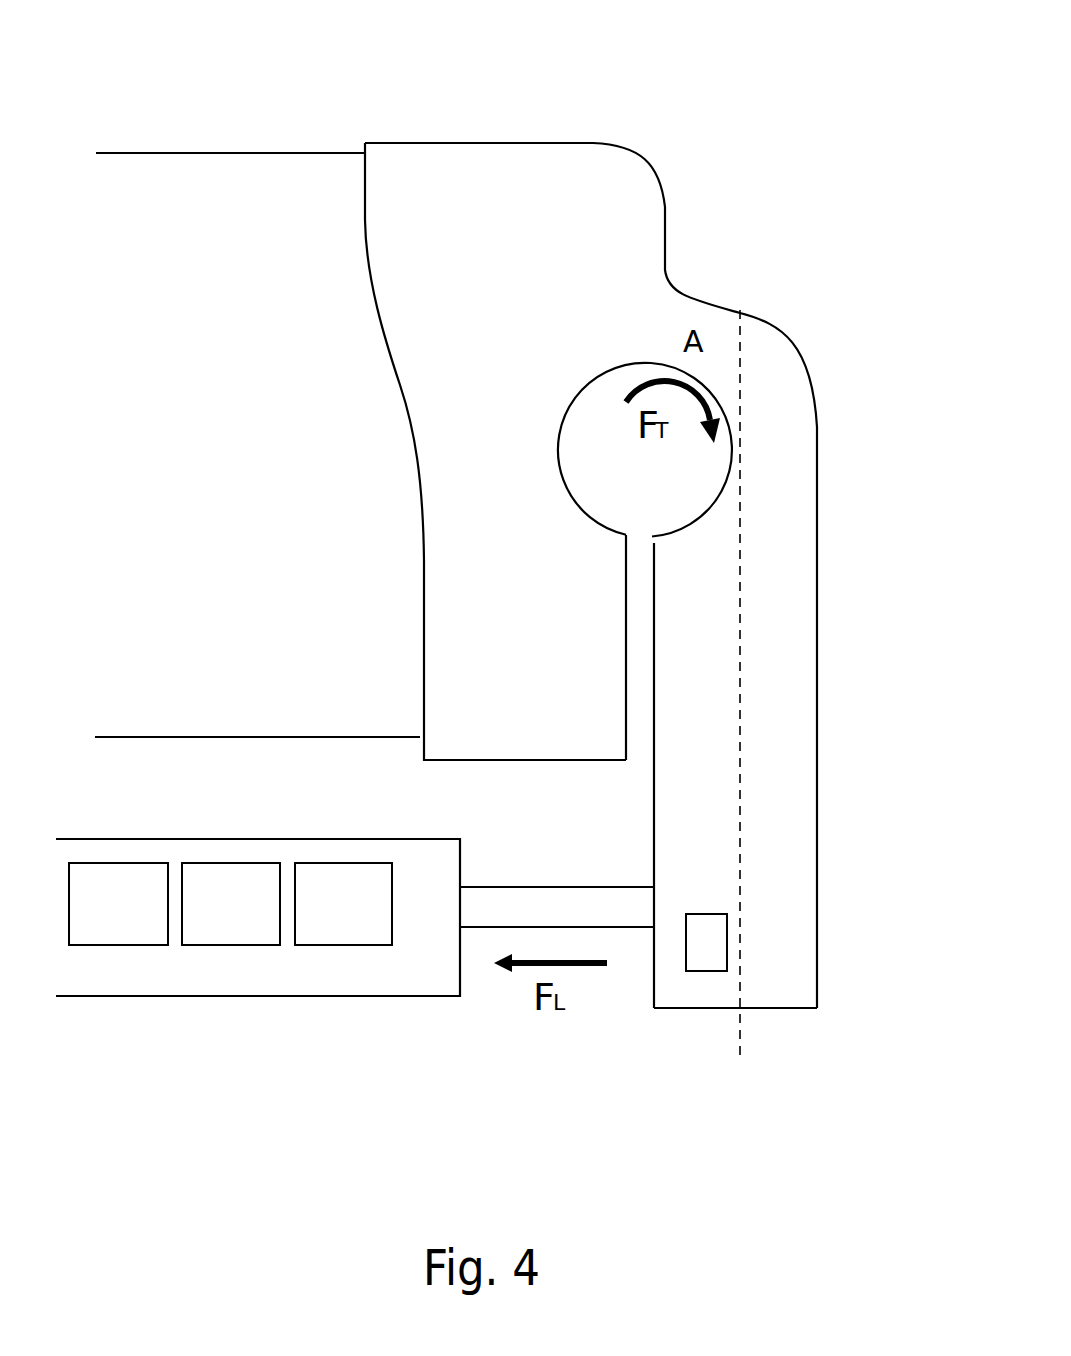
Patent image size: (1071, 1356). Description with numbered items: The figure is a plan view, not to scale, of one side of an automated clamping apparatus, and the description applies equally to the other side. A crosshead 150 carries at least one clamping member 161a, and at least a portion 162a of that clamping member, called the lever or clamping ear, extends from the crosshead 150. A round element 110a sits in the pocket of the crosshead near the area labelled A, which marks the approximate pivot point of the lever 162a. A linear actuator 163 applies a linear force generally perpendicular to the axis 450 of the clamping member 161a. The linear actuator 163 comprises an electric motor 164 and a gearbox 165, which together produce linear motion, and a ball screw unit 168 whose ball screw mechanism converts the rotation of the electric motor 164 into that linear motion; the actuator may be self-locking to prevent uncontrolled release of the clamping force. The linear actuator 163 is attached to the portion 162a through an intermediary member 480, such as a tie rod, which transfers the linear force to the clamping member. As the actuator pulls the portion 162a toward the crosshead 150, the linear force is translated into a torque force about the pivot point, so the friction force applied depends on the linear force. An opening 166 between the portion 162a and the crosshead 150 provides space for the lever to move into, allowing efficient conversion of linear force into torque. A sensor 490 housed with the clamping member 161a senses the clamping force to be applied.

The crosshead 150 is at (262, 238).
The roller 110a is at (618, 435).
The opening 166 is at (643, 592).
The clamping member 161a is at (758, 563).
The portion of the clamping member 162a is at (798, 893).
The sensor 490 is at (708, 933).
The axis 450 is at (739, 703).
The intermediary member 480 is at (538, 908).
The linear actuator 163 is at (260, 996).
The electric motor 164 is at (150, 920).
The gearbox 165 is at (262, 920).
The ball screw unit 168 is at (375, 920).